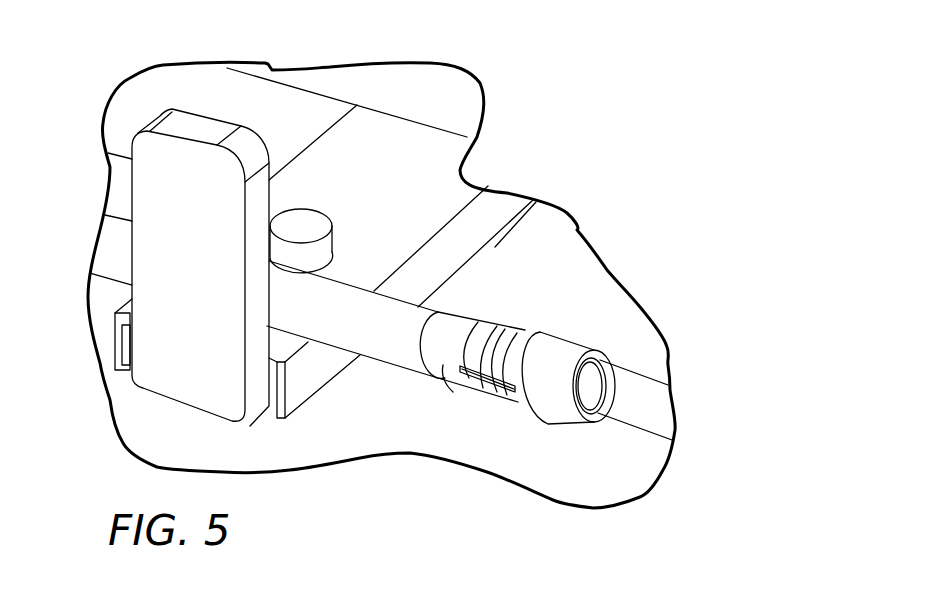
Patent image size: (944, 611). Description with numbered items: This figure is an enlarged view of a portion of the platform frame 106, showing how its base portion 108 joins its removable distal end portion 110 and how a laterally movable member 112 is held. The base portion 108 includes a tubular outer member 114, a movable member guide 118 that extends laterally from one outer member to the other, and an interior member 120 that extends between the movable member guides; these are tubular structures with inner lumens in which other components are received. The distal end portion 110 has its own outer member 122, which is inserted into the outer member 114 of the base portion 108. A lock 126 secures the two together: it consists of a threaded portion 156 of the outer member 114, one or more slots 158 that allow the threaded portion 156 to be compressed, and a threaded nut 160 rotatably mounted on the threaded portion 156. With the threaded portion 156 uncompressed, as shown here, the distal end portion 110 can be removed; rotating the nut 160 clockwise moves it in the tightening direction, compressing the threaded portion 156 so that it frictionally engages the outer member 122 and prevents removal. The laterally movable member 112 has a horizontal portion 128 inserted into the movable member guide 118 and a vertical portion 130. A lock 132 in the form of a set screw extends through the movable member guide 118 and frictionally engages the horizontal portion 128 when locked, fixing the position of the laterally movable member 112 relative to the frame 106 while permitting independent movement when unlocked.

The frame 106 is at (64, 262).
The base portion 108 is at (498, 186).
The distal end portion 110 is at (676, 402).
The laterally movable member 112 is at (200, 267).
The outer member 114 is at (378, 362).
The movable member guide 118 is at (391, 186).
The interior member 120 is at (463, 90).
The outer member 122 is at (647, 433).
The lock 126 is at (583, 298).
The horizontal portion 128 is at (272, 390).
The vertical portion 130 is at (198, 118).
The lock 132 is at (305, 207).
The threaded portion 156 is at (480, 385).
The slot 158 is at (505, 328).
The threaded nut 160 is at (553, 423).